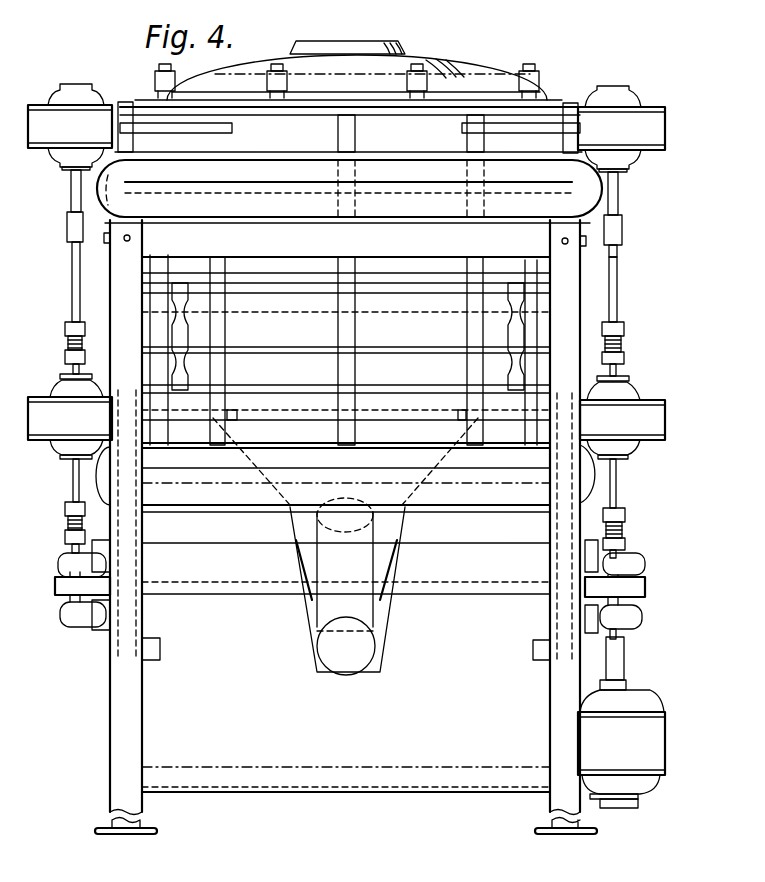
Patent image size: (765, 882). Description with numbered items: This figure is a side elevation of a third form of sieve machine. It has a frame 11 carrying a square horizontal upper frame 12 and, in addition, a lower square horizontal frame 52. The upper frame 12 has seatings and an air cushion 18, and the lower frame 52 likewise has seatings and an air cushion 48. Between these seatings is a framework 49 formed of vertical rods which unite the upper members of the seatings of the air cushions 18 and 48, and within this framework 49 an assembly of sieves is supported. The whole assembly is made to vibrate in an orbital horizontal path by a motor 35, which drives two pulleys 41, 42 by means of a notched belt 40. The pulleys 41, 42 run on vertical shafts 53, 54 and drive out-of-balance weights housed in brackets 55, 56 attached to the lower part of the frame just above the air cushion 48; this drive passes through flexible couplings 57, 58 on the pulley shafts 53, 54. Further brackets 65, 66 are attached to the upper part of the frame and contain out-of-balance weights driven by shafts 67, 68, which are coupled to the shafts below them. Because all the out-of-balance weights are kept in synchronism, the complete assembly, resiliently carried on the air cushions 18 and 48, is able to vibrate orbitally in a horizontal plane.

The frame 11 is at (125, 703).
The square horizontal upper frame 12 is at (588, 212).
The air cushion 18 is at (113, 187).
The motor 35 is at (593, 740).
The notched belt 40 is at (458, 592).
The pulley 41 is at (628, 584).
The pulley 42 is at (53, 573).
The air cushion 48 is at (190, 478).
The framework 49 is at (217, 325).
The lower square horizontal frame 52 is at (243, 530).
The vertical shaft 53 is at (614, 573).
The vertical shaft 54 is at (77, 513).
The bracket 55 is at (625, 415).
The bracket 56 is at (42, 412).
The flexible coupling 57 is at (620, 515).
The flexible coupling 58 is at (75, 491).
The bracket 65 is at (609, 125).
The bracket 66 is at (72, 112).
The shaft 67 is at (617, 278).
The shaft 68 is at (78, 292).